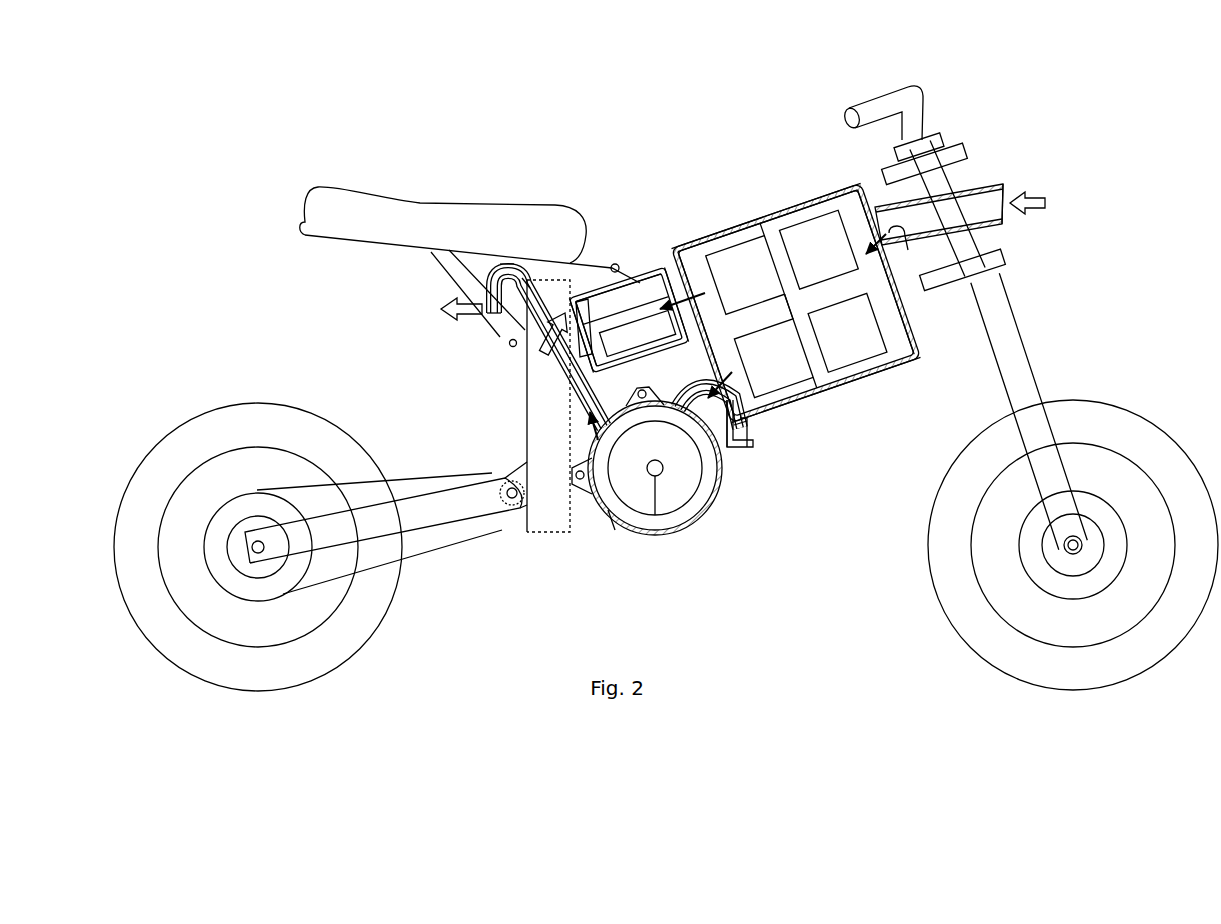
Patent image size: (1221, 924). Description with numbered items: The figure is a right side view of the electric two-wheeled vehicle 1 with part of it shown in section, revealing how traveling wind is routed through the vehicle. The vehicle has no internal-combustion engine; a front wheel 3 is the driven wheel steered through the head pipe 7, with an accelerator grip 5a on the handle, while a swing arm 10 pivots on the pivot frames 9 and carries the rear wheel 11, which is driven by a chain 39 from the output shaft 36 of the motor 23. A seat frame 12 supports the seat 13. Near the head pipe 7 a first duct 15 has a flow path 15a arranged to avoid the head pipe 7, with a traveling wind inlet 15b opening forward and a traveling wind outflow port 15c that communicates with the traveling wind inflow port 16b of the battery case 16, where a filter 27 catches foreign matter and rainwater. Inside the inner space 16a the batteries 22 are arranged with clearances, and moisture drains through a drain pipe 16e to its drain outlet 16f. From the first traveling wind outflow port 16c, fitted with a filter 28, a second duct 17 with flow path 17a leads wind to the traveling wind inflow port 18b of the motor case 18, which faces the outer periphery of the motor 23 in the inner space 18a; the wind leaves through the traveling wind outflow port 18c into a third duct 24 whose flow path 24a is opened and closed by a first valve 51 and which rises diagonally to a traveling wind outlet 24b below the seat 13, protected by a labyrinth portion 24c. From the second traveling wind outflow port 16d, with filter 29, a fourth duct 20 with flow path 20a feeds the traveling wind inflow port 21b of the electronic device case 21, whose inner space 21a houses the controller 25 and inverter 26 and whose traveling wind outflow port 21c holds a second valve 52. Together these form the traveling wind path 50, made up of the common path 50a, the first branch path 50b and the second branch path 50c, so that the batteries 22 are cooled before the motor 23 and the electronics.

The electric two-wheeled vehicle 1 is at (317, 153).
The front wheel 3 is at (1150, 400).
The accelerator grip 5a is at (862, 102).
The head pipe 7 is at (912, 190).
The pivot frames 9 is at (528, 533).
The swing arm 10 is at (442, 528).
The rear wheel 11 is at (245, 400).
The seat frame 12 is at (338, 236).
The seat 13 is at (370, 197).
The first duct 15 is at (990, 230).
The flow path 15a is at (975, 203).
The traveling wind inlet 15b is at (1005, 193).
The traveling wind outflow port 15c is at (898, 252).
The battery case 16 is at (885, 360).
The inner space 16a is at (790, 240).
The traveling wind inflow port 16b is at (858, 240).
The first traveling wind outflow port 16c is at (758, 370).
The second traveling wind outflow port 16d is at (680, 282).
The drain pipe 16e is at (760, 400).
The drain outlet 16f is at (742, 437).
The second duct 17 is at (700, 383).
The flow path 17a is at (720, 450).
The motor case 18 is at (628, 513).
The inner space 18a is at (603, 505).
The traveling wind inflow port 18b is at (693, 512).
The traveling wind outflow port 18c is at (585, 423).
The fourth duct 20 is at (640, 285).
The flow path 20a is at (662, 282).
The electronic device case 21 is at (605, 285).
The inner space 21a is at (617, 285).
The traveling wind inflow port 21b is at (630, 283).
The traveling wind outflow port 21c is at (537, 282).
The batteries 22 is at (738, 257).
The motor 23 is at (648, 520).
The third duct 24 is at (580, 385).
The flow path 24a is at (578, 400).
The traveling wind outlet 24b is at (485, 318).
The labyrinth portion 24c is at (487, 278).
The controller 25 is at (577, 285).
The inverter 26 is at (557, 282).
The filter 27 is at (803, 222).
The filter 28 is at (787, 338).
The filter 29 is at (700, 278).
The output shaft 36 is at (658, 474).
The chain 39 is at (400, 560).
The traveling wind path 50 is at (902, 362).
The common path 50a is at (855, 360).
The first branch path 50b is at (618, 535).
The second branch path 50c is at (597, 283).
The first valve 51 is at (512, 343).
The second valve 52 is at (510, 285).